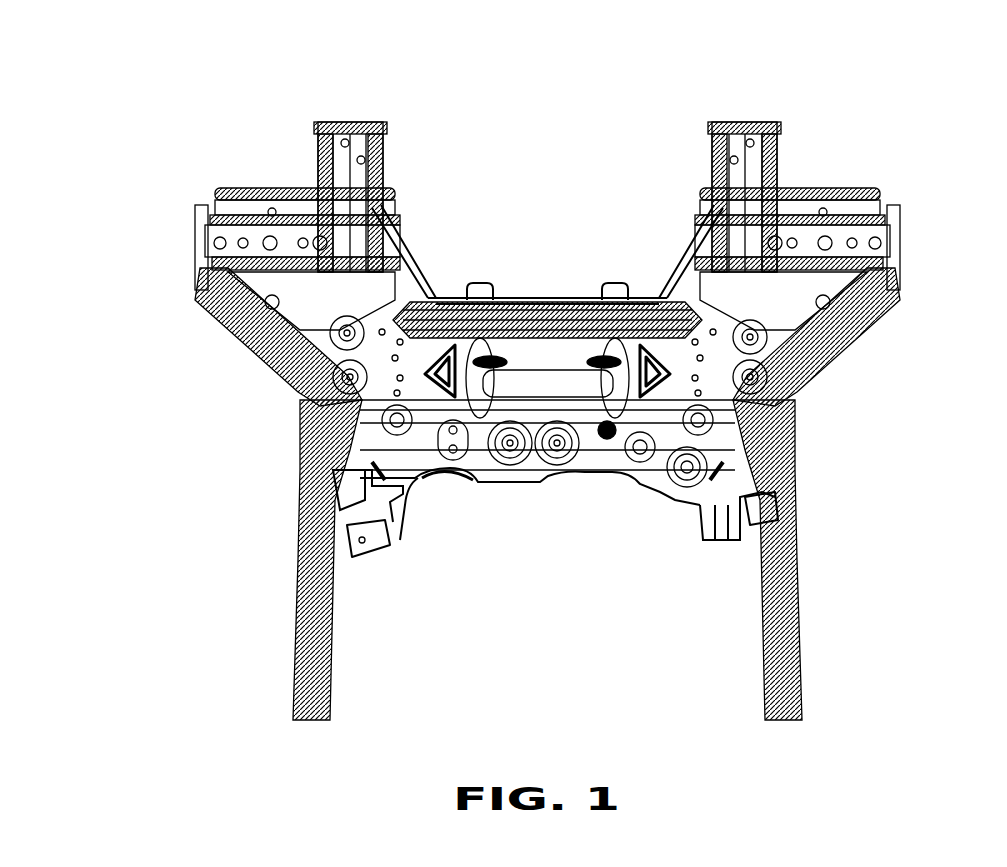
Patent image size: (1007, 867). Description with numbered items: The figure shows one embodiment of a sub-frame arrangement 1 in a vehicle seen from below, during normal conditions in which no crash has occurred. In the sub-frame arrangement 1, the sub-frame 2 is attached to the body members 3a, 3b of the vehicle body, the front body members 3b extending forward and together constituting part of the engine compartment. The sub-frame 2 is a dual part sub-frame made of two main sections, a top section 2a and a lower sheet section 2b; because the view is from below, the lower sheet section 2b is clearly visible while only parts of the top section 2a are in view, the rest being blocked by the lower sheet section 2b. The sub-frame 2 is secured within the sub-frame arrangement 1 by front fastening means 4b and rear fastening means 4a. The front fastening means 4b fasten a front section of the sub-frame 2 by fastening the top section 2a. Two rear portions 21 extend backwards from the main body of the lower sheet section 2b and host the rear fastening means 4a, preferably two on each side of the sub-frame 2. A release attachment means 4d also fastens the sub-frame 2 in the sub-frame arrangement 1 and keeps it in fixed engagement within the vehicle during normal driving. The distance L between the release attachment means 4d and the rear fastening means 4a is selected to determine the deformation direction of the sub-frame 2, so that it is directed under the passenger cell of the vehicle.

The sub-frame arrangement 1 is at (266, 100).
The sub-frame 2 is at (558, 273).
The rear portions 21 is at (393, 245).
The top section 2a is at (345, 556).
The lower sheet section 2b is at (508, 478).
The body members 3a is at (712, 170).
The front body members 3b is at (298, 598).
The rear fastening means 4a is at (300, 222).
The front fastening means 4b is at (297, 491).
The release attachment means 4d is at (200, 285).
The distance L is at (212, 216).